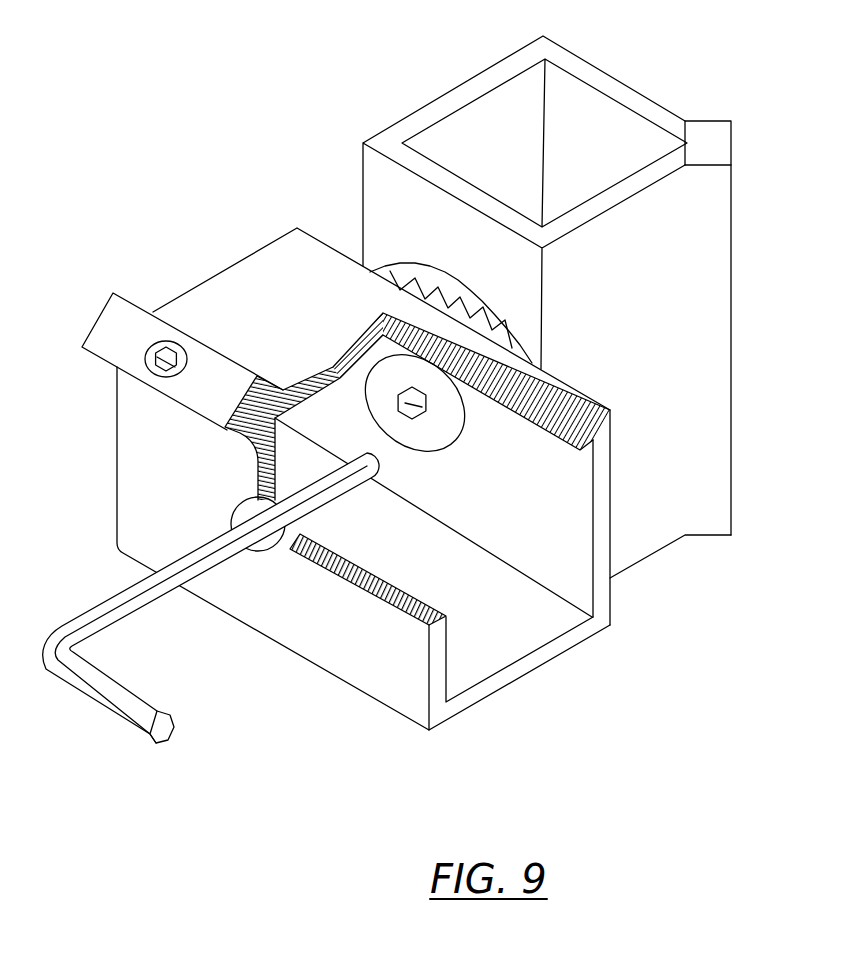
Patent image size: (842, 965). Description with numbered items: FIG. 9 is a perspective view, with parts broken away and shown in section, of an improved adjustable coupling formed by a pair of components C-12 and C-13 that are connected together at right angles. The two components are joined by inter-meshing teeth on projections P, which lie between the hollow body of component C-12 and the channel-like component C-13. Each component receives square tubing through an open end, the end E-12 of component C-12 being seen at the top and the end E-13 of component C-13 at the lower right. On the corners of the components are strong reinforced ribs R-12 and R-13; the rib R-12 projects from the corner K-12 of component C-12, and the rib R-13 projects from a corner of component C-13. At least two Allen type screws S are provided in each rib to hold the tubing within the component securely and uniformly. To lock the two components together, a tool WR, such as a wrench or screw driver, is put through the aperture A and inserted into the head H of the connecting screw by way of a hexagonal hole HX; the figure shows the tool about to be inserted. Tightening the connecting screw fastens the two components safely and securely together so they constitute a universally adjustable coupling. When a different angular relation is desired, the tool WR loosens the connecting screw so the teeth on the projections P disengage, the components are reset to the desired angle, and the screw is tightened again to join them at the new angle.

The component C-12 is at (547, 307).
The end opening of connector member 12 E-12 is at (544, 117).
The corner K-12 is at (717, 305).
The reinforced rib R-12 is at (738, 173).
The component C-13 is at (363, 466).
The end of channel member 13 E-13 is at (539, 673).
The reinforced rib R-13 is at (155, 355).
The Allen type screw S is at (134, 371).
The projection P is at (441, 313).
The head of the connecting screw H is at (415, 407).
The hexagonal hole HX is at (400, 393).
The aperture A is at (258, 554).
The tool WR is at (222, 598).